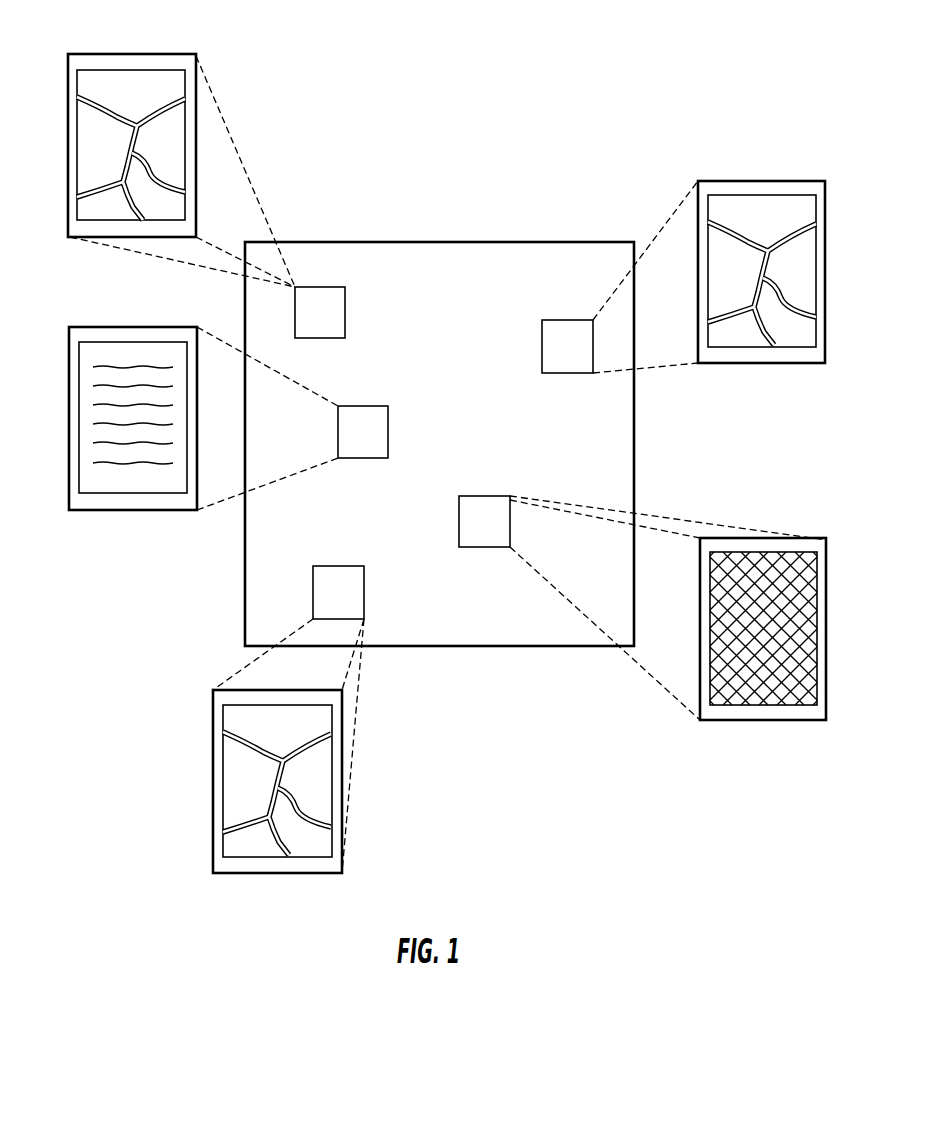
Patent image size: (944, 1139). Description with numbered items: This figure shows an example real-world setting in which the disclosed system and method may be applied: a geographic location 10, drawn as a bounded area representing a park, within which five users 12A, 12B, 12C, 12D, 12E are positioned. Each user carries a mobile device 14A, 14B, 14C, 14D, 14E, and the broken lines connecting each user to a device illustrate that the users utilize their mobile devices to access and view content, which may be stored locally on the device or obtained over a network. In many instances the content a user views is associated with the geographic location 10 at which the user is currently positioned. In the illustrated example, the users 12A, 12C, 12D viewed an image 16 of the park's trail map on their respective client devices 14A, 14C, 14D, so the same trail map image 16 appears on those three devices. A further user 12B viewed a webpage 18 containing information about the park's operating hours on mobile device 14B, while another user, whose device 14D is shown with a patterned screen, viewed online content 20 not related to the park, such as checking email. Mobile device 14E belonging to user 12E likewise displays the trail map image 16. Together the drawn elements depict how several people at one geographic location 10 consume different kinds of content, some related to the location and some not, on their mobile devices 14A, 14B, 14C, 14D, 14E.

The geographic location 10 is at (421, 242).
The user 12A is at (345, 312).
The user 12B is at (388, 432).
The user 12C is at (364, 592).
The user 12D is at (459, 520).
The user 12E is at (542, 346).
The mobile device 14A is at (155, 54).
The mobile device 14B is at (130, 327).
The mobile device 14C is at (213, 787).
The mobile device 14D is at (755, 720).
The mobile device 14E is at (746, 363).
The image 16 is at (100, 147).
The webpage 18 is at (152, 473).
The online content 20 is at (723, 663).